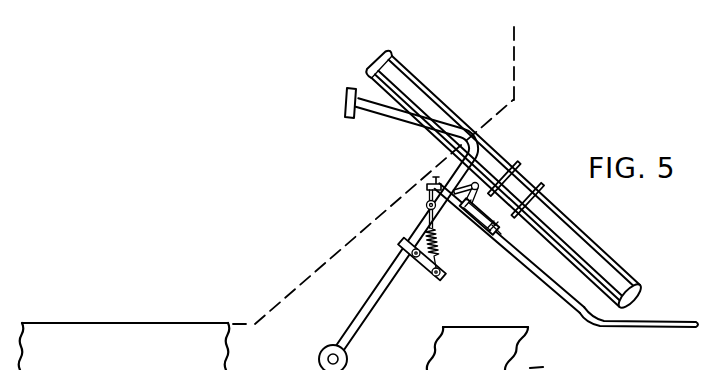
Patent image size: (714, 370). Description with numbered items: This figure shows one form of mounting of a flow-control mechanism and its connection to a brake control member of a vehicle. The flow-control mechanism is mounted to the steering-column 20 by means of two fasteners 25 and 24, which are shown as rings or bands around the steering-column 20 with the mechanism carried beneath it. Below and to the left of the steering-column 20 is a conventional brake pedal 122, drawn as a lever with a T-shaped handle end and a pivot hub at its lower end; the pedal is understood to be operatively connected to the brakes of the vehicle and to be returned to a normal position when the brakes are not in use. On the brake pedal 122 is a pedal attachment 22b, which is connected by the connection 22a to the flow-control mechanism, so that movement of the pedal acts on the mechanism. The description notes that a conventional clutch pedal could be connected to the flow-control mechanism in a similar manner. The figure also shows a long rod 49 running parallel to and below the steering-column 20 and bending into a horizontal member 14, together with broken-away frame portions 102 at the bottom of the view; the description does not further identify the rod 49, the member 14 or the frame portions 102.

The frame rod 14 is at (657, 320).
The steering-column 20 is at (591, 233).
The fastener 24 is at (486, 223).
The fastener 25 is at (540, 192).
The rod 49 is at (499, 255).
The frame member 102 is at (263, 369).
The brake pedal 122 is at (376, 292).
The connection 22a is at (438, 248).
The pedal attachment 22b is at (440, 277).